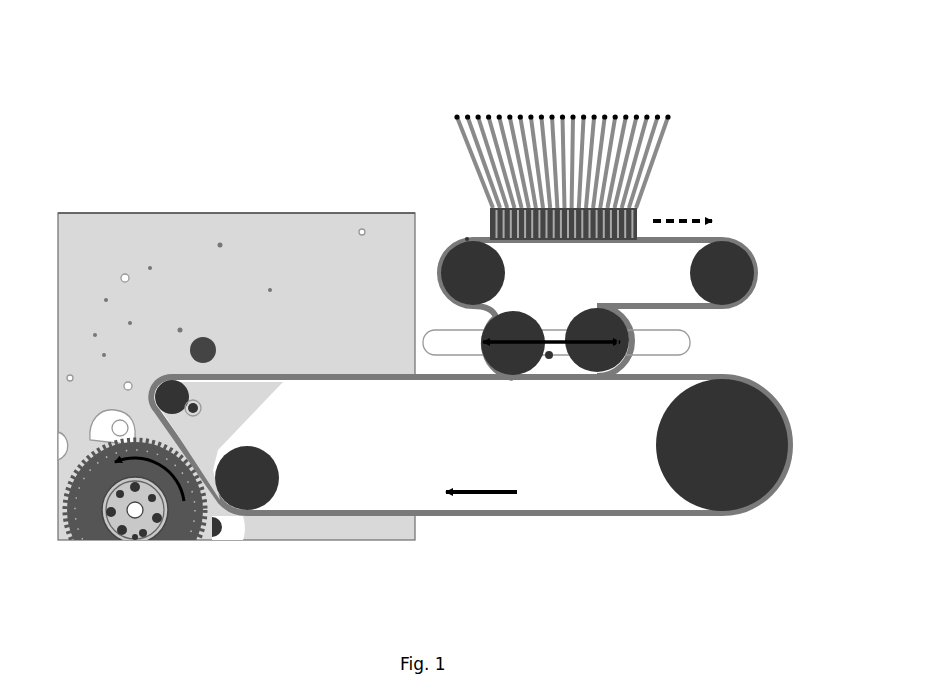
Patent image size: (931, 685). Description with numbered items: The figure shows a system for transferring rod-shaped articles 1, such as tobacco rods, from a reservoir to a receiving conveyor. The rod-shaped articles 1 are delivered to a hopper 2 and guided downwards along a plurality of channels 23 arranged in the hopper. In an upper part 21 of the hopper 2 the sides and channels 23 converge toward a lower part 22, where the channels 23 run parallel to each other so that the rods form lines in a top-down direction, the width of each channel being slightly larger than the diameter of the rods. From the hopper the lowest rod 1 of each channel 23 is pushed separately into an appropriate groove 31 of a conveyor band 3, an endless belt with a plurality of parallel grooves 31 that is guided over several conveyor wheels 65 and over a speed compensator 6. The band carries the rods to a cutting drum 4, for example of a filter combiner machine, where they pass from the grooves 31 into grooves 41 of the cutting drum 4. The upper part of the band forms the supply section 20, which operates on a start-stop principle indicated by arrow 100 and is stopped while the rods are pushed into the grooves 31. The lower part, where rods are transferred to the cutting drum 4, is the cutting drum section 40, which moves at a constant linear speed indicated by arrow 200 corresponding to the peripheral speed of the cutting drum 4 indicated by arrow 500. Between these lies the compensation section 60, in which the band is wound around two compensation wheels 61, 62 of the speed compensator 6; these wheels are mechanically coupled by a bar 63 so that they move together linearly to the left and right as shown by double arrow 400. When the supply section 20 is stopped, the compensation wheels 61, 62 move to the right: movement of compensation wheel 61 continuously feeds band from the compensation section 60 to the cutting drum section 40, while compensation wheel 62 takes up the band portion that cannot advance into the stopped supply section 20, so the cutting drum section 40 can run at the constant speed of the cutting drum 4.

The rod-shaped article 1 is at (467, 237).
The hopper 2 is at (594, 137).
The conveyor band 3 is at (490, 222).
The cutting drum 4 is at (135, 558).
The speed compensator 6 is at (602, 363).
The supply section 20 is at (646, 283).
The upper part of the hopper 21 is at (668, 118).
The lower part of the hopper 22 is at (640, 225).
The channels 23 is at (585, 122).
The grooves 31 is at (703, 240).
The cutting drum section 40 is at (813, 375).
The grooves of the cutting drum 41 is at (203, 537).
The compensation section 60 is at (813, 313).
The compensation wheel 61 is at (610, 325).
The compensation wheel 62 is at (507, 323).
The bar 63 is at (555, 342).
The conveyor wheels 65 is at (473, 267).
The arrow 100 is at (677, 221).
The arrow 200 is at (488, 495).
The double arrow 400 is at (520, 345).
The arrow 500 is at (150, 463).